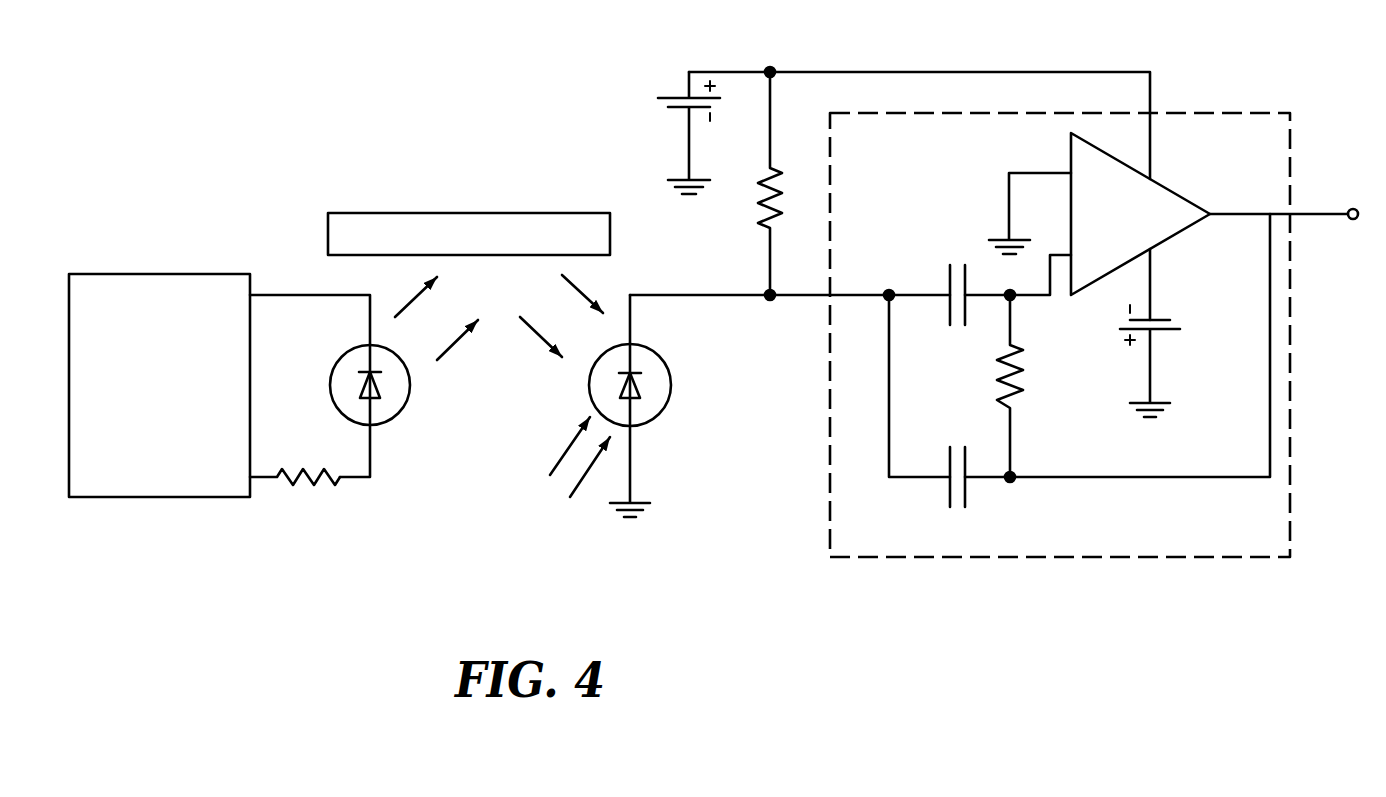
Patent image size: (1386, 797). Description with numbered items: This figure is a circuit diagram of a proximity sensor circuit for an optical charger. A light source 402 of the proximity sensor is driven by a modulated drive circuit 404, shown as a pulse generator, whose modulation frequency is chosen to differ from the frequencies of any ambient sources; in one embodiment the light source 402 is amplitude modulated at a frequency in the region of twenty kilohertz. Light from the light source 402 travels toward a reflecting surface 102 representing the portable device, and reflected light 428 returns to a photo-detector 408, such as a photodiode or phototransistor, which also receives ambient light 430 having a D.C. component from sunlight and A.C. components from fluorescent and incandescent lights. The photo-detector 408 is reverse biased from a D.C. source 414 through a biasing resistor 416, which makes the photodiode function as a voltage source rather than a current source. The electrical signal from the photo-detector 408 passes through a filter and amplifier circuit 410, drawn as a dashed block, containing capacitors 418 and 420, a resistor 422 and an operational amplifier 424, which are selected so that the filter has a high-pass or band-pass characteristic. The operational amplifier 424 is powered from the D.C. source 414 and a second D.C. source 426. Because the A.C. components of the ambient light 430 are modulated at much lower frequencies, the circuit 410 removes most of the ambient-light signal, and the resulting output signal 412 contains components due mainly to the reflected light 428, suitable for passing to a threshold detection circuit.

The target surface 102 is at (470, 213).
The light source 402 is at (408, 393).
The modulated drive circuit 404 is at (183, 274).
The photo-detector 408 is at (672, 366).
The filter and amplifier circuit 410 is at (829, 477).
The signal 412 is at (1312, 214).
The D.C. source 414 is at (736, 72).
The biasing resistor 416 is at (770, 232).
The capacitor 418 is at (635, 398).
The capacitor 420 is at (948, 497).
The resistor 422 is at (997, 377).
The operational amplifier 424 is at (1178, 194).
The D.C. source 426 is at (1150, 292).
The reflected light 428 is at (522, 318).
The ambient light 430 is at (568, 446).